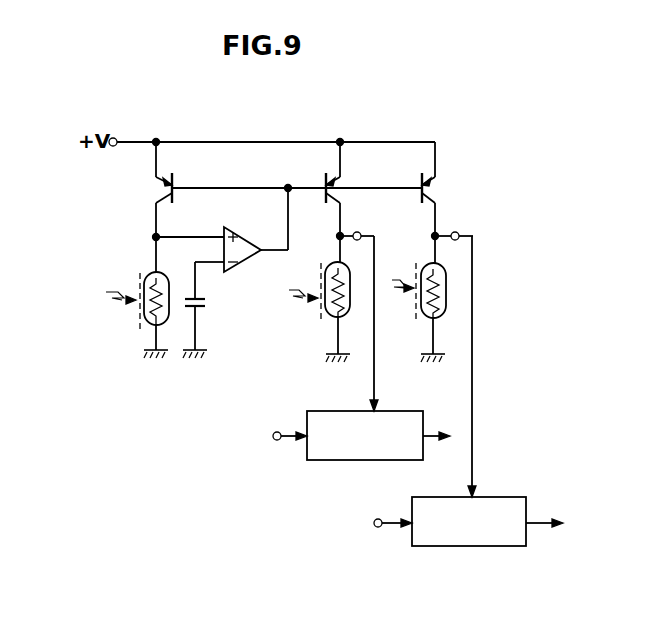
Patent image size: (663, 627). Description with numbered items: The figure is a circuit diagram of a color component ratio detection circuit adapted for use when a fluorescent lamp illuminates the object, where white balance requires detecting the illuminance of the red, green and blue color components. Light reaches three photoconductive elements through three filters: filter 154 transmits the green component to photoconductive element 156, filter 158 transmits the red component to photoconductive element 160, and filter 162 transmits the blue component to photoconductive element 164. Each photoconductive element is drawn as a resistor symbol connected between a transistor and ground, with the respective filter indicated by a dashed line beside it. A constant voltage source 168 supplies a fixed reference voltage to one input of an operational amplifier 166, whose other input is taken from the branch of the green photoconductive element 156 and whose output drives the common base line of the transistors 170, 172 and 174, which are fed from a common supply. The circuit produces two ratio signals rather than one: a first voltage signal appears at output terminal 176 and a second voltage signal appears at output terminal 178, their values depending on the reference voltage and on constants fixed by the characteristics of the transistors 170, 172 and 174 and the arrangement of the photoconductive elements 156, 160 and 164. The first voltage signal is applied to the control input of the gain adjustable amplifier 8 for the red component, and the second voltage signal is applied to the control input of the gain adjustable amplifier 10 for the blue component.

The filter 154 is at (139, 316).
The photoconductive element 156 is at (146, 330).
The filter 158 is at (322, 308).
The photoconductive element 160 is at (330, 320).
The filter 162 is at (416, 298).
The photoconductive element 164 is at (428, 320).
The operational amplifier 166 is at (252, 240).
The constant voltage source 168 is at (202, 306).
The transistor 170 is at (169, 192).
The transistor 172 is at (323, 180).
The transistor 174 is at (420, 180).
The output terminal 176 is at (360, 231).
The output terminal 178 is at (459, 231).
The gain adjustable amplifier 8 is at (417, 411).
The gain adjustable amplifier 10 is at (512, 497).